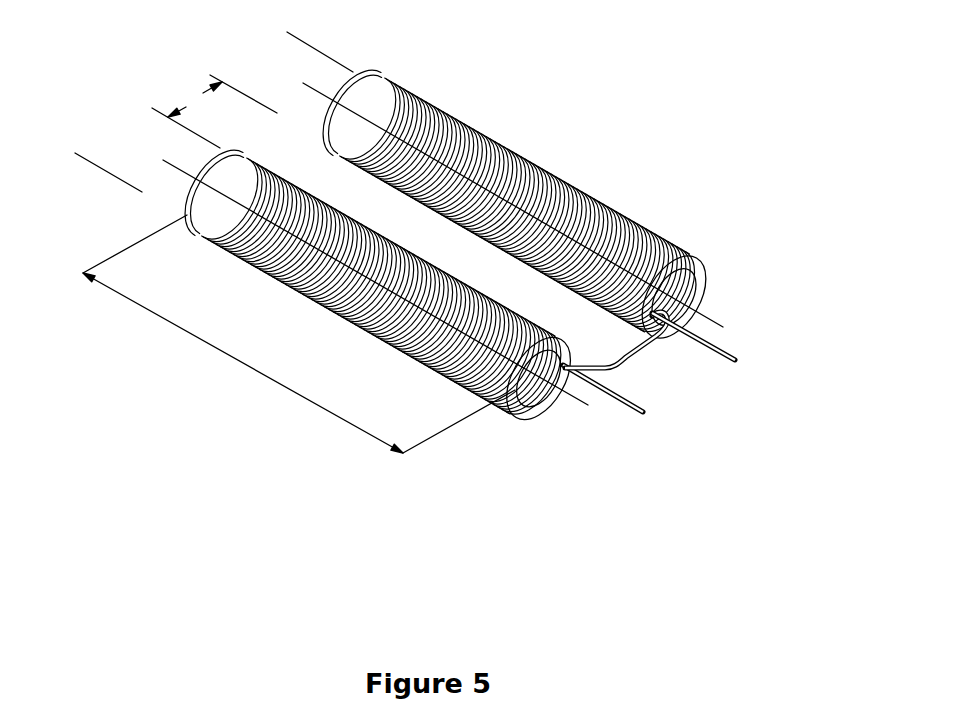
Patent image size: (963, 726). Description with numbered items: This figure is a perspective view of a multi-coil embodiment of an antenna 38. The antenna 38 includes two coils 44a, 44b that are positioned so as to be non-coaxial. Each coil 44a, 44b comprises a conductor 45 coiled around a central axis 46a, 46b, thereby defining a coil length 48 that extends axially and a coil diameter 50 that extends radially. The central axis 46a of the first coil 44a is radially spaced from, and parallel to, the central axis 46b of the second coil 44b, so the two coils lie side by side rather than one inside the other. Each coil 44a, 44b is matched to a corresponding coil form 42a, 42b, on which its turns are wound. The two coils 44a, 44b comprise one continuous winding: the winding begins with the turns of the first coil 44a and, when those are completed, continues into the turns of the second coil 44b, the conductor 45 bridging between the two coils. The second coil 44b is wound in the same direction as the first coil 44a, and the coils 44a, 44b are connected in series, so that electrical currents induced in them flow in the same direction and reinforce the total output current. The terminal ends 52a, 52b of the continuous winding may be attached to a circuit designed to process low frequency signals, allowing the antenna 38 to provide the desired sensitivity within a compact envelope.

The antenna 38 is at (590, 61).
The coil form 42a is at (514, 414).
The coil form 42b is at (703, 268).
The first coil 44a is at (347, 307).
The second coil 44b is at (573, 198).
The conductor 45 is at (634, 352).
The central axis 46a is at (187, 173).
The central axis 46b is at (317, 92).
The coil length 48 is at (230, 350).
The coil diameter 50 is at (297, 38).
The terminal end 52a is at (620, 403).
The terminal end 52b is at (727, 352).